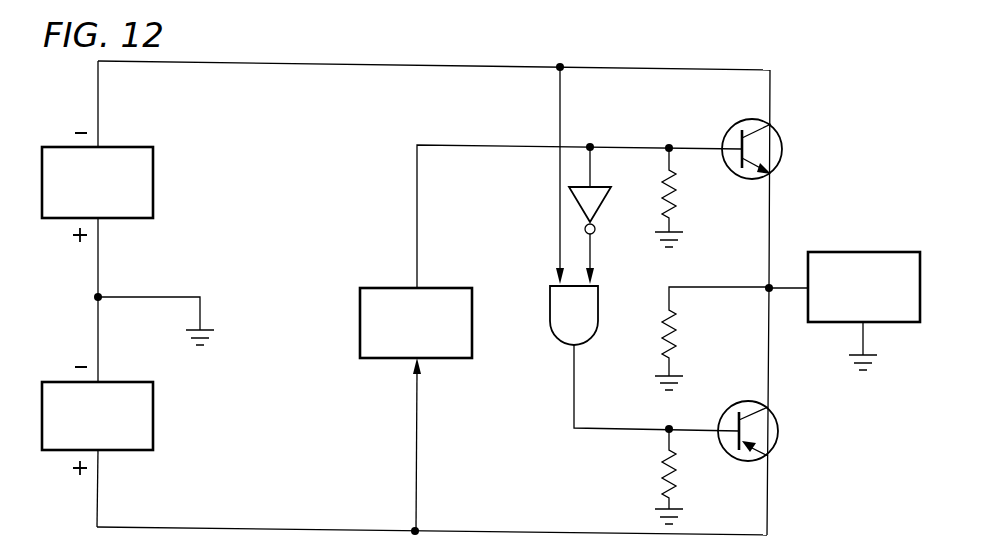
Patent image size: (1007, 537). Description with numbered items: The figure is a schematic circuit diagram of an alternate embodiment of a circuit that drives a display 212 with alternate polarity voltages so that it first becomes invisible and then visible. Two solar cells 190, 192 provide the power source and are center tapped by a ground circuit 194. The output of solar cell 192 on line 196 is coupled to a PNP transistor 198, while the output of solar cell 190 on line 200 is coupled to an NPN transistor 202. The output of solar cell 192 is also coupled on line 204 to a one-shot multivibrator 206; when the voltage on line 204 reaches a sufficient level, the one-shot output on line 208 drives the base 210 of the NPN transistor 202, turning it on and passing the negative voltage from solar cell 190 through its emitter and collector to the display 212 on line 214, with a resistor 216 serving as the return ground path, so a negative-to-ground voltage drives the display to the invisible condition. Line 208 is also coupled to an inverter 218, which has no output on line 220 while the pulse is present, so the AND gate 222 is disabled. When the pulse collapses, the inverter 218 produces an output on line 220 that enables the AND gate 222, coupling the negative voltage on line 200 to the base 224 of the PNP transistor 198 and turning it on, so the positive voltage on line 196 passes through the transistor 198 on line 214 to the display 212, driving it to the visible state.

The solar cell 190 is at (150, 165).
The solar cell 192 is at (152, 407).
The ground circuit 194 is at (180, 297).
The line 196 is at (98, 486).
The PNP transistor 198 is at (772, 450).
The line 200 is at (98, 88).
The NPN transistor 202 is at (778, 133).
The line 204 is at (415, 427).
The one-shot multivibrator 206 is at (360, 338).
The line 208 is at (417, 213).
The base 210 is at (728, 130).
The display 212 is at (880, 252).
The line 214 is at (787, 287).
The resistor 216 is at (673, 322).
The inverter 218 is at (602, 200).
The line 220 is at (590, 252).
The AND gate 222 is at (562, 345).
The base 224 is at (740, 441).